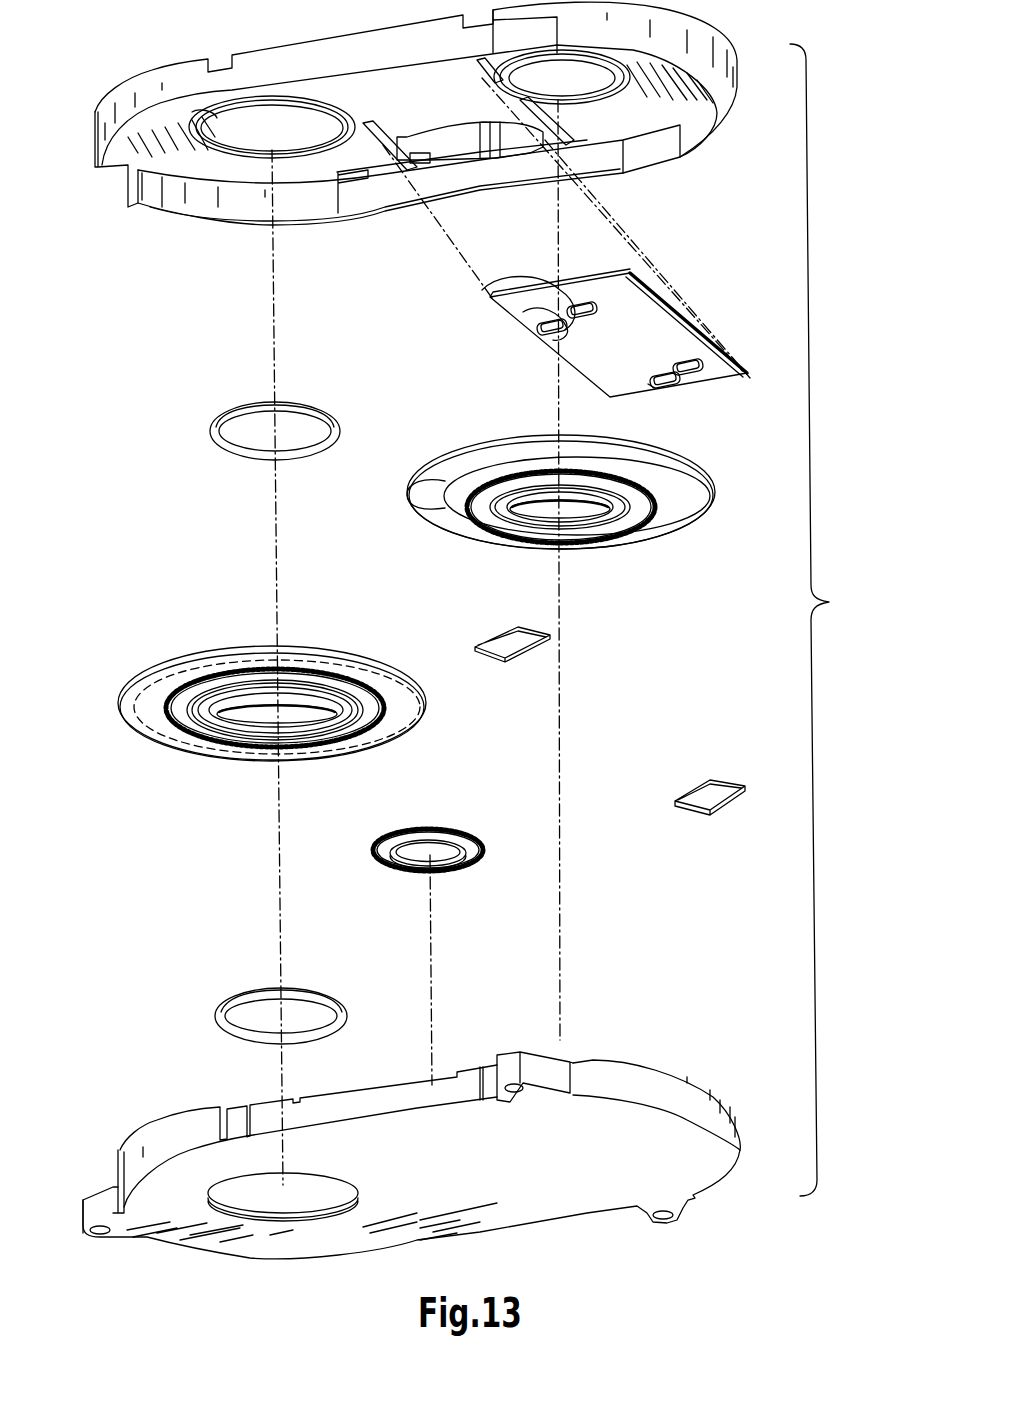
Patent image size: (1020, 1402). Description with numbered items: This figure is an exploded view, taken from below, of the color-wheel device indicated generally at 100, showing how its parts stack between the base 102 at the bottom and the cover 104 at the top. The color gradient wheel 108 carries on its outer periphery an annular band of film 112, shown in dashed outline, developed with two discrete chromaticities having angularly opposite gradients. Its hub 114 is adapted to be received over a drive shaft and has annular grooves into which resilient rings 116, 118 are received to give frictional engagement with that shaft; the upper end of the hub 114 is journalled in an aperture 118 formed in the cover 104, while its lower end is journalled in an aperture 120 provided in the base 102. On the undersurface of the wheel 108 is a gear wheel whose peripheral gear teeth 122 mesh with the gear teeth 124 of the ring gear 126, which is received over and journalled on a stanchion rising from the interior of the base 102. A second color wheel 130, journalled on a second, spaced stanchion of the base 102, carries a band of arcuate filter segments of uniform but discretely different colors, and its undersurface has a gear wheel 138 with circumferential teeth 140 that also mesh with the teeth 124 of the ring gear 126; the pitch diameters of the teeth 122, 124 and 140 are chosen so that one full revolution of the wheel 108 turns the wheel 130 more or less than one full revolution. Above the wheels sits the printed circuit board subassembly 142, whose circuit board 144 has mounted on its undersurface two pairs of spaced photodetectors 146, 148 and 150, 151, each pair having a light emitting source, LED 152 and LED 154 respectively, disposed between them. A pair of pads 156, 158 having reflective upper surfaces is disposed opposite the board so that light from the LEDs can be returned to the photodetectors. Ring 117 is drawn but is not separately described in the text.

The embodiment of the invention 100 is at (833, 620).
The base 102 is at (453, 1237).
The cover 104 is at (740, 82).
The color gradient wheel 108 is at (180, 662).
The annular band of film 112 is at (417, 713).
The hub 114 is at (217, 740).
The resilient ring 116 is at (233, 413).
The sealing ring 117 is at (253, 990).
The resilient ring / aperture 118 is at (197, 124).
The aperture 120 is at (240, 1182).
The peripheral gear teeth 122 is at (325, 672).
The gear teeth 124 is at (403, 828).
The ring gear 126 is at (388, 857).
The second color wheel 130 is at (470, 452).
The gear wheel 138 is at (490, 520).
The teeth 140 is at (484, 490).
The printed circuit board subassembly 142 is at (563, 370).
The circuit board 144 is at (637, 290).
The photodetector 146 is at (522, 311).
The photodetector 148 is at (480, 288).
The photodetector 150 is at (700, 370).
The photodetector 151 is at (655, 384).
The LED 152 is at (565, 331).
The LED 154 is at (667, 362).
The pad 156 is at (497, 633).
The pad 158 is at (688, 791).